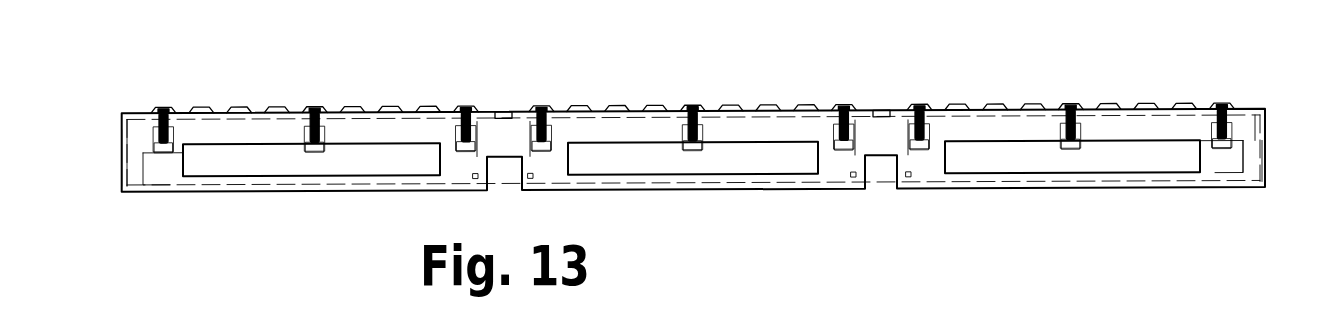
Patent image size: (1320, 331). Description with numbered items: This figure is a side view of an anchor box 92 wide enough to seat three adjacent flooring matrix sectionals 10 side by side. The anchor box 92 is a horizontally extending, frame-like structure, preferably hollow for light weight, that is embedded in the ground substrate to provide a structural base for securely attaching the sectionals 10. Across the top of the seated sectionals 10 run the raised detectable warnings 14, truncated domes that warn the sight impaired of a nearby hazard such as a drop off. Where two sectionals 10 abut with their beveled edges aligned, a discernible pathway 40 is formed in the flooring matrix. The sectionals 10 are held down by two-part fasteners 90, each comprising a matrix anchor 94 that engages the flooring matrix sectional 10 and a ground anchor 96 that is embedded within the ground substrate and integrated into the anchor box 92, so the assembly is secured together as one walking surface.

The flooring matrix sectional 10 is at (128, 103).
The detectable warnings 14 is at (283, 107).
The discernible pathway 40 is at (503, 112).
The fasteners 90 is at (553, 136).
The anchor box 92 is at (121, 149).
The matrix anchor 94 is at (1214, 125).
The ground anchor 96 is at (1232, 142).